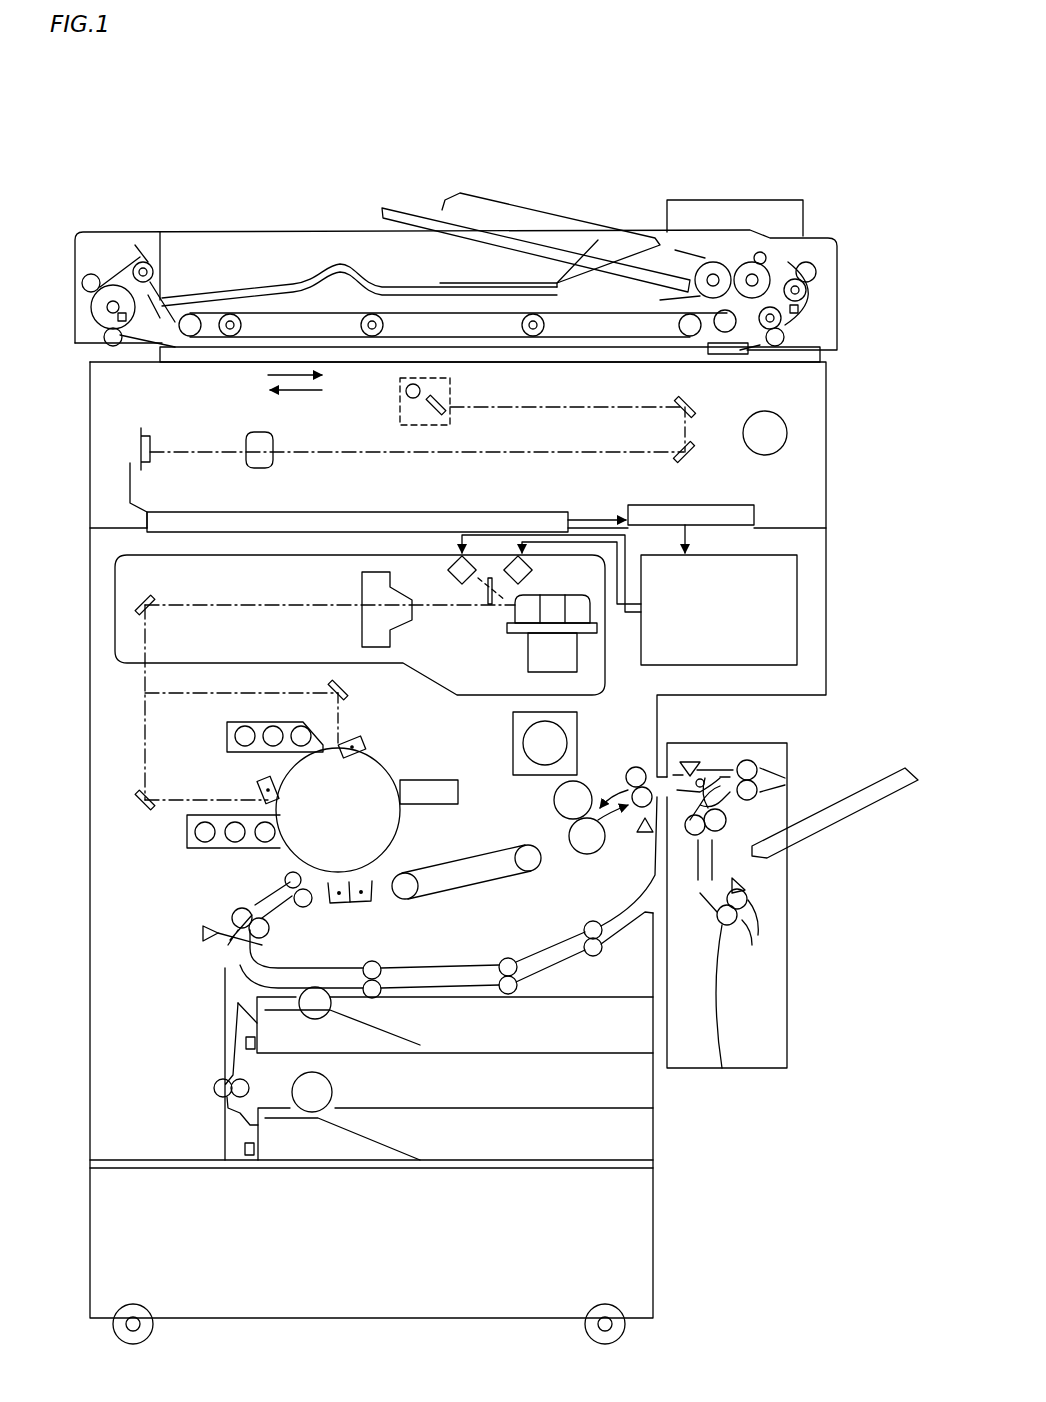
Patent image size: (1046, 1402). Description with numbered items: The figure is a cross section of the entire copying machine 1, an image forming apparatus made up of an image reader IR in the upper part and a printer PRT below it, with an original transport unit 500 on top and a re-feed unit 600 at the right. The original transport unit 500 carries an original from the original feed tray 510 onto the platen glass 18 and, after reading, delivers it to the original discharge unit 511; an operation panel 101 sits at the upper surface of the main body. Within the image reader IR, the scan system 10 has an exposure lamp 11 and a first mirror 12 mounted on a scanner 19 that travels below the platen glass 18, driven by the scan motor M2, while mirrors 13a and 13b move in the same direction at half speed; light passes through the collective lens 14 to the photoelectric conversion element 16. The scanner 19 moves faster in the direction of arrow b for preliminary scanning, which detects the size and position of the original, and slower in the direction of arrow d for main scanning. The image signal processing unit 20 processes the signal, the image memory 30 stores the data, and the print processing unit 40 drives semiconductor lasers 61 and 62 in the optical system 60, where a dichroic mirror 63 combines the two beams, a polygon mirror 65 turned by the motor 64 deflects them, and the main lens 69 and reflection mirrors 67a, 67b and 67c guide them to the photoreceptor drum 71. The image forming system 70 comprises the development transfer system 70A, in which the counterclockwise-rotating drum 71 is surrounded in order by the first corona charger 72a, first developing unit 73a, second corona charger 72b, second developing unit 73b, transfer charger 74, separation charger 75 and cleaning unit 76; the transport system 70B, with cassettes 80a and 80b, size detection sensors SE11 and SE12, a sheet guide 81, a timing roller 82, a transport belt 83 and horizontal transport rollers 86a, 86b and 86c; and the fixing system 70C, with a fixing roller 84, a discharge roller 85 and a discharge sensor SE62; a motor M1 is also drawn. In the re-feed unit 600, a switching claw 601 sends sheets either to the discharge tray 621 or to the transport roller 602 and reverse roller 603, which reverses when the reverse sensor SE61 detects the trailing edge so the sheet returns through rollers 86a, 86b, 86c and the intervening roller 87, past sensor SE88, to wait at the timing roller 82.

The copying machine 1 is at (458, 715).
The original transport unit 500 is at (319, 230).
The original feed tray 510 is at (521, 235).
The original discharge unit 511 is at (207, 292).
The operation panel 101 is at (724, 200).
The image reader IR is at (829, 452).
The printer PRT is at (832, 720).
The scan system 10 is at (396, 405).
The exposure lamp 11 is at (405, 388).
The first mirror 12 is at (449, 408).
The mirror 13a is at (680, 395).
The mirror 13b is at (691, 457).
The collective lens 14 is at (246, 452).
The photoelectric conversion element 16 is at (152, 442).
The platen glass 18 is at (604, 363).
The scanner 19 is at (455, 383).
The image signal processing unit 20 is at (476, 510).
The image memory 30 is at (648, 505).
The print processing unit 40 is at (797, 578).
The optical system 60 is at (310, 575).
The semiconductor laser 61 is at (535, 575).
The semiconductor laser 62 is at (450, 570).
The dichroic mirror 63 is at (487, 592).
The motor 64 is at (580, 655).
The polygon mirror 65 is at (518, 615).
The reflection mirror 67a is at (147, 598).
The reflection mirror 67b is at (140, 807).
The reflection mirror 67c is at (350, 688).
The main lens 69 is at (360, 620).
The image forming system 70 is at (455, 755).
The development transfer system 70A is at (223, 742).
The transport system 70B is at (414, 935).
The fixing system 70C is at (496, 822).
The photoreceptor drum 71 is at (300, 800).
The first corona charger 72a is at (371, 738).
The second corona charger 72b is at (262, 790).
The first developing unit 73a is at (226, 732).
The second developing unit 73b is at (189, 848).
The transfer charger 74 is at (338, 905).
The separation charger 75 is at (367, 903).
The cleaning unit 76 is at (460, 791).
The sheet guide 81 is at (221, 996).
The timing roller 82 is at (285, 877).
The transport belt 83 is at (437, 870).
The fixing roller 84 is at (578, 856).
The discharge roller 85 is at (635, 767).
The horizontal transport roller 86a is at (584, 927).
The horizontal transport roller 86b is at (498, 962).
The horizontal transport roller 86c is at (363, 965).
The intervening roller 87 is at (232, 916).
The cassette 80a is at (604, 1002).
The cassette 80b is at (635, 1128).
The size detection sensor SE11 is at (246, 1043).
The size detection sensor SE12 is at (243, 1149).
The sensor SE88 is at (200, 927).
The discharge sensor SE62 is at (638, 832).
The reverse sensor SE61 is at (748, 886).
The re-feed unit 600 is at (792, 1000).
The switching claw 601 is at (693, 770).
The transport roller 602 is at (735, 820).
The reverse roller 603 is at (722, 1068).
The discharge tray 621 is at (880, 782).
The main motor M1 is at (545, 743).
The scan motor M2 is at (765, 433).
The arrow d is at (268, 372).
The arrow b is at (307, 390).